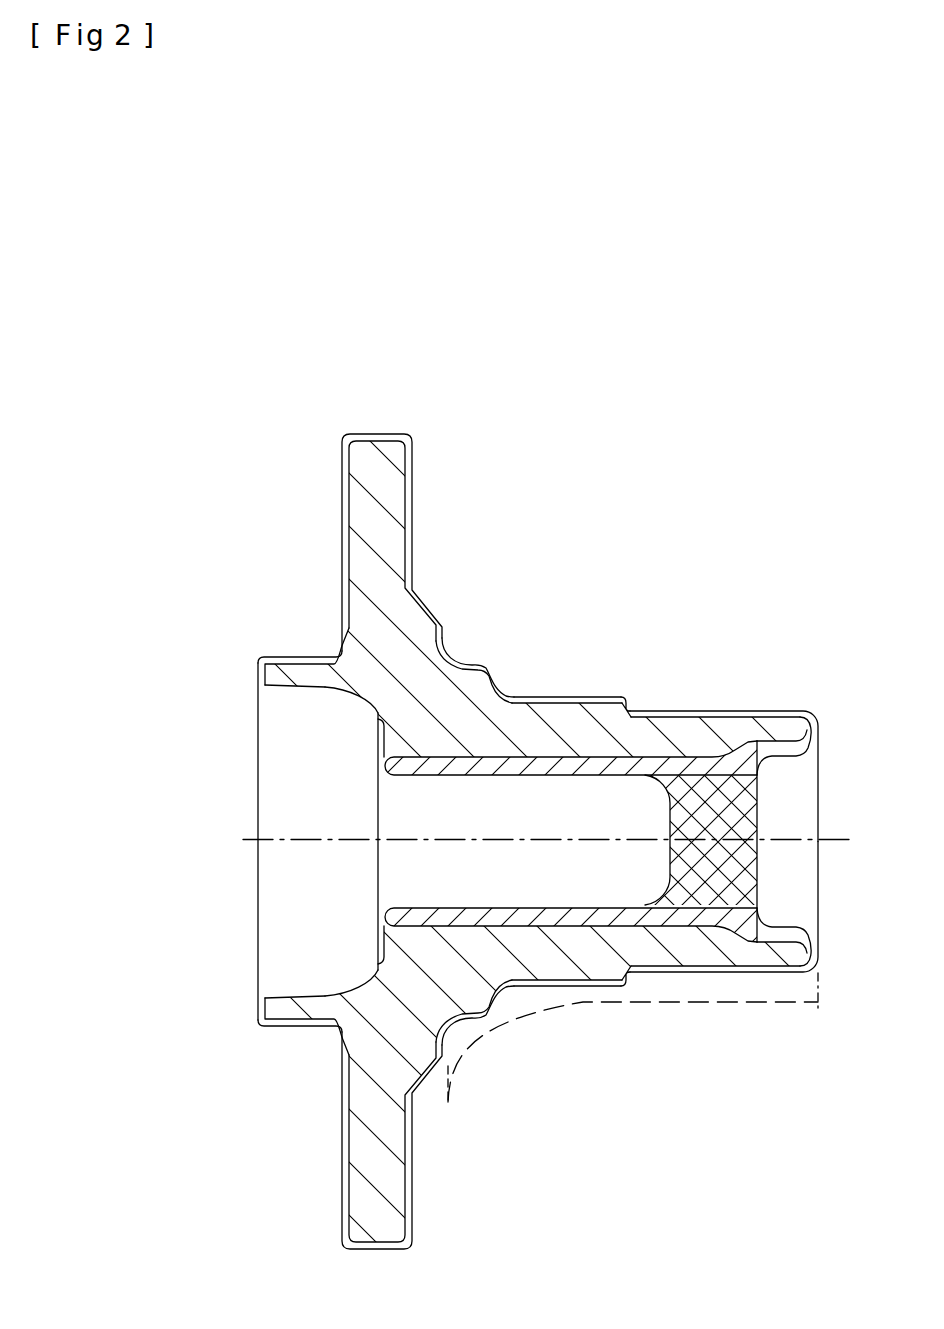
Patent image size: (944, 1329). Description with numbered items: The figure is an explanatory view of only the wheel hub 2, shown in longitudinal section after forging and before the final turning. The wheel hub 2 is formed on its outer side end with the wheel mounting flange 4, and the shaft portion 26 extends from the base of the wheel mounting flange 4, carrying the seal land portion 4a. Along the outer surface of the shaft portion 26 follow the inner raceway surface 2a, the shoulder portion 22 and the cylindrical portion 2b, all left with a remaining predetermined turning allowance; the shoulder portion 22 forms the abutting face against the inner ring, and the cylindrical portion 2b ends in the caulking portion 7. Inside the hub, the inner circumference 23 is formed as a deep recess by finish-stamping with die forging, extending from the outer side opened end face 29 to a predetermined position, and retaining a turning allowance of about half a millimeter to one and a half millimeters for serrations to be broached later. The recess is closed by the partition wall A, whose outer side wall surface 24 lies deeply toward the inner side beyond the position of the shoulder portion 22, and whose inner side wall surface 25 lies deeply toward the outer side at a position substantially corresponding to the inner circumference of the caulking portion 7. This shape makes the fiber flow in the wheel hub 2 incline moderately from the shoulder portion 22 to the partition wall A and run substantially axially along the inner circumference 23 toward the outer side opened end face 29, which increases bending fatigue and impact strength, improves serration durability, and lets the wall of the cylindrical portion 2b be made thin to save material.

The wheel hub 2 is at (377, 698).
The inner raceway surface 2a is at (497, 678).
The cylindrical portion 2b is at (752, 713).
The wheel mounting flange 4 is at (368, 447).
The seal land portion 4a is at (458, 658).
The caulking portion 7 is at (790, 730).
The shoulder portion 22 is at (642, 708).
The inner circumference 23 is at (457, 774).
The outer side wall surface 24 is at (670, 823).
The inner side wall surface 25 is at (757, 847).
The shaft portion 26 is at (703, 1007).
The outer side opened end face 29 is at (378, 742).
The partition wall A is at (743, 813).